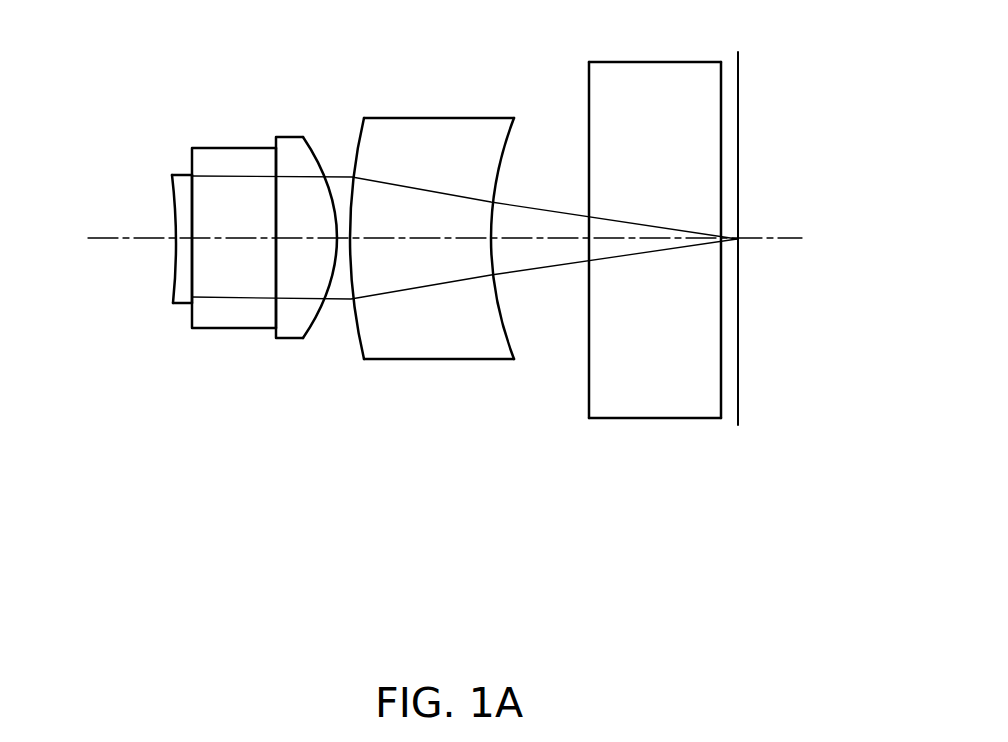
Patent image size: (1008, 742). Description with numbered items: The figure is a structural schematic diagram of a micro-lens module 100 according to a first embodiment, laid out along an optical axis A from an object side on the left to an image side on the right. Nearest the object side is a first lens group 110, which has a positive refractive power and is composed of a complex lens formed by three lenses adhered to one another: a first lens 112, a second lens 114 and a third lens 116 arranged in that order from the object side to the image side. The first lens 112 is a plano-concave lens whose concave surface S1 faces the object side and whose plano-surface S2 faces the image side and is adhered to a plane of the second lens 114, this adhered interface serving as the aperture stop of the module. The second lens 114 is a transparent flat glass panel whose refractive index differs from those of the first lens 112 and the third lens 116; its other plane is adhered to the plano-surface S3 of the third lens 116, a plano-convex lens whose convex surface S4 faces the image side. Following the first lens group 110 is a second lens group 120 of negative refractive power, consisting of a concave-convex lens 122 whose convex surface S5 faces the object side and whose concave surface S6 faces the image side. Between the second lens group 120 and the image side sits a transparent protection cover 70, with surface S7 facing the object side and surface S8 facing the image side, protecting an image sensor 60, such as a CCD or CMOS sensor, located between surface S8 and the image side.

The micro-lens module 100 is at (805, 555).
The first lens group 110 is at (303, 412).
The first lens 112 is at (170, 245).
The second lens 114 is at (234, 256).
The third lens 116 is at (303, 242).
The second lens group 120 is at (428, 234).
The concave-convex lens 122 is at (428, 203).
The protection cover 70 is at (640, 236).
The image sensor 60 is at (738, 397).
The optical axis A is at (105, 240).
The concave surface S1 is at (172, 202).
The plano-surface S2 is at (202, 206).
The plano-surface S3 is at (274, 158).
The convex surface S4 is at (323, 148).
The convex surface S5 is at (346, 159).
The concave surface S6 is at (508, 136).
The surface S7 is at (588, 78).
The surface S8 is at (722, 80).